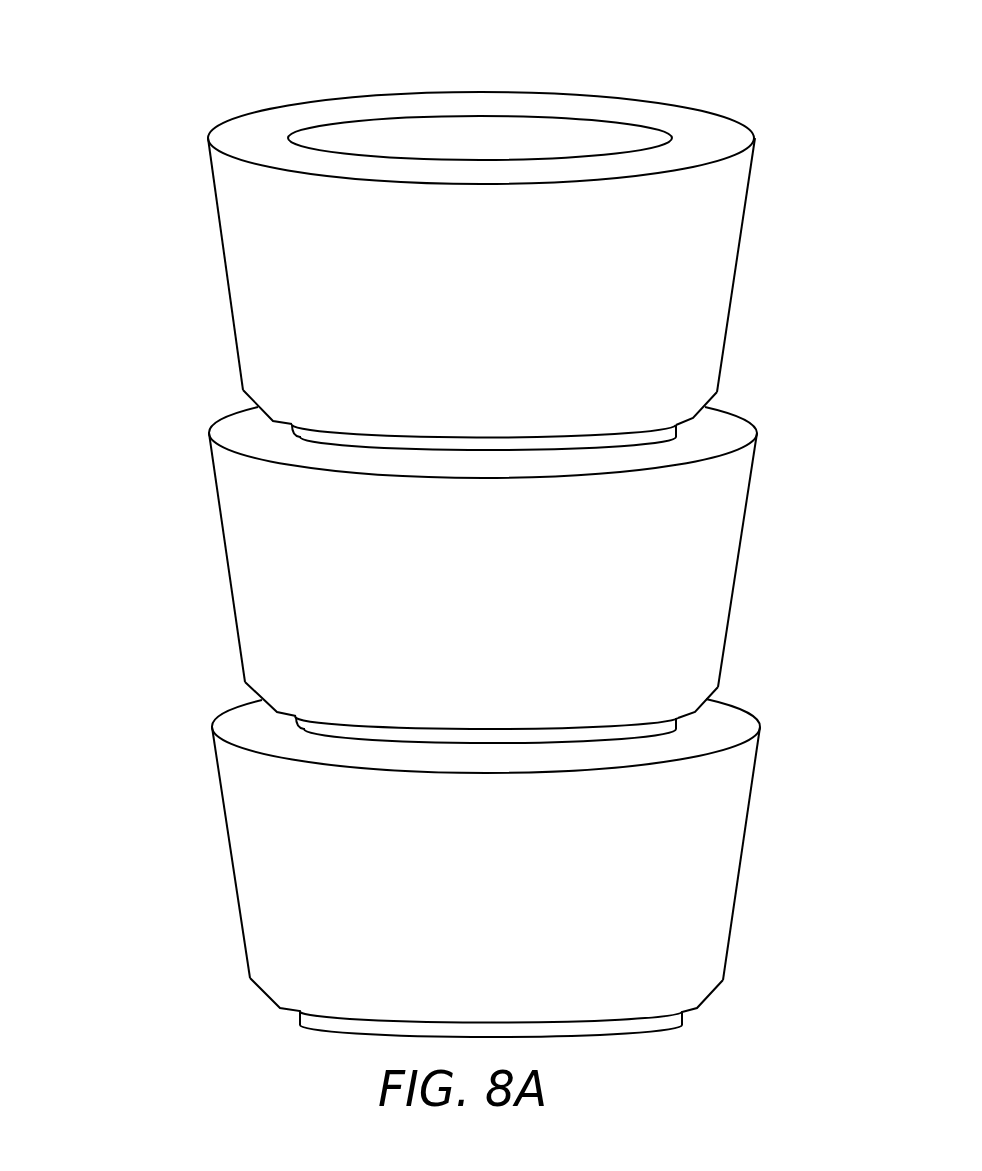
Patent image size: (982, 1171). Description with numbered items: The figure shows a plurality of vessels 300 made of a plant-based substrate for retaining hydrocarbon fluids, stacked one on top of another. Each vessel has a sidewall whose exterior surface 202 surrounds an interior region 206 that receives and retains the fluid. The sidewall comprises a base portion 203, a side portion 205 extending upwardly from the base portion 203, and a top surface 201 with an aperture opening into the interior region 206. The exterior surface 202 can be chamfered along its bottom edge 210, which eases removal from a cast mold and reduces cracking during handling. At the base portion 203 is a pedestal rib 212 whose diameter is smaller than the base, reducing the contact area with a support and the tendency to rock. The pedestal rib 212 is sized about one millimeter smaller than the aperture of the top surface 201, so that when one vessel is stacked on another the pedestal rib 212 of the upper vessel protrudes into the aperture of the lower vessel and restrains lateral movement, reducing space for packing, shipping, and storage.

The plurality of vessels 300 is at (462, 523).
The top surface 201 is at (712, 138).
The exterior surface 202 is at (225, 282).
The base portion 203 is at (397, 399).
The side portion 205 is at (240, 205).
The interior region 206 is at (463, 128).
The bottom edge 210 is at (700, 415).
The pedestal rib 212 is at (632, 444).